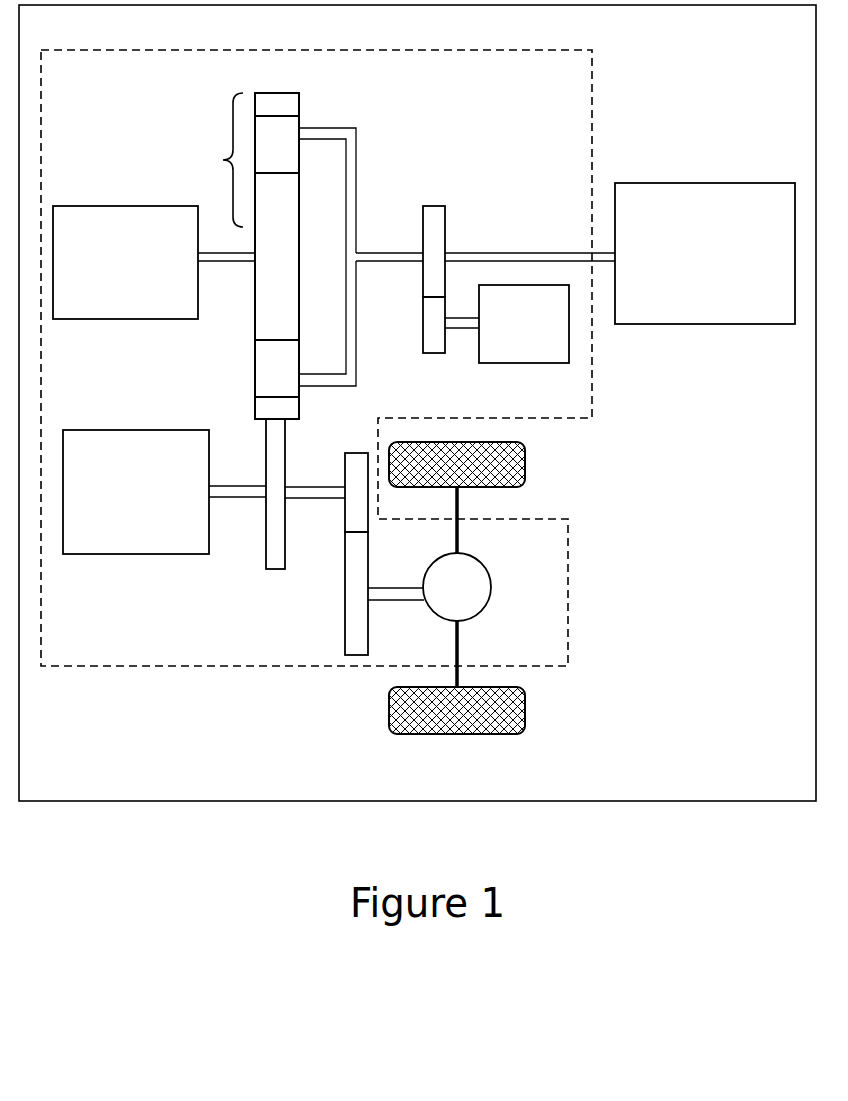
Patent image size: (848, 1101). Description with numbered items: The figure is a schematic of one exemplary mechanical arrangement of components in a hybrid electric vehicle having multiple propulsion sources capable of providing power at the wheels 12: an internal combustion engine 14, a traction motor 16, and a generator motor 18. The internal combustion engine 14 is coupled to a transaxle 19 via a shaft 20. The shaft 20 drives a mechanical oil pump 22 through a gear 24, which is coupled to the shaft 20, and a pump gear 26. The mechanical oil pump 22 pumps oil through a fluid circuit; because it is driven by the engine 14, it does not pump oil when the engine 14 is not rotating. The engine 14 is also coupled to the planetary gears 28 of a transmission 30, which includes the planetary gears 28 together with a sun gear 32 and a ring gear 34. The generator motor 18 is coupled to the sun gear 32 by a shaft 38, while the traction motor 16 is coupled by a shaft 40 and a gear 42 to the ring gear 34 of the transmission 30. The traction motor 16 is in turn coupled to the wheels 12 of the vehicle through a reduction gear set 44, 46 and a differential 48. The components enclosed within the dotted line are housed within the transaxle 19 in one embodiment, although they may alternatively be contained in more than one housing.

The wheels 12 is at (525, 472).
The internal combustion engine 14 is at (705, 253).
The traction motor 16 is at (136, 492).
The generator motor 18 is at (125, 262).
The transaxle 19 is at (198, 667).
The shaft 20 is at (395, 247).
The mechanical oil pump 22 is at (536, 365).
The gear 24 is at (430, 208).
The pump gear 26 is at (418, 330).
The planetary gears 28 is at (305, 256).
The transmission 30 is at (240, 256).
The sun gear 32 is at (277, 256).
The ring gear 34 is at (300, 103).
The shaft 38 is at (222, 263).
The shaft 40 is at (244, 497).
The gear 42 is at (263, 557).
The reduction gear set 44 is at (352, 452).
The reduction gear set 46 is at (343, 599).
The differential 48 is at (457, 587).